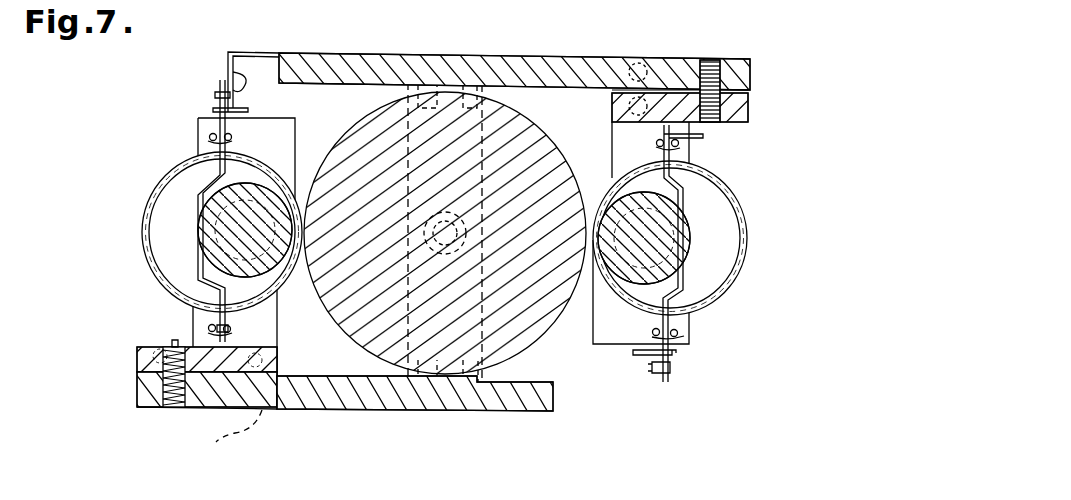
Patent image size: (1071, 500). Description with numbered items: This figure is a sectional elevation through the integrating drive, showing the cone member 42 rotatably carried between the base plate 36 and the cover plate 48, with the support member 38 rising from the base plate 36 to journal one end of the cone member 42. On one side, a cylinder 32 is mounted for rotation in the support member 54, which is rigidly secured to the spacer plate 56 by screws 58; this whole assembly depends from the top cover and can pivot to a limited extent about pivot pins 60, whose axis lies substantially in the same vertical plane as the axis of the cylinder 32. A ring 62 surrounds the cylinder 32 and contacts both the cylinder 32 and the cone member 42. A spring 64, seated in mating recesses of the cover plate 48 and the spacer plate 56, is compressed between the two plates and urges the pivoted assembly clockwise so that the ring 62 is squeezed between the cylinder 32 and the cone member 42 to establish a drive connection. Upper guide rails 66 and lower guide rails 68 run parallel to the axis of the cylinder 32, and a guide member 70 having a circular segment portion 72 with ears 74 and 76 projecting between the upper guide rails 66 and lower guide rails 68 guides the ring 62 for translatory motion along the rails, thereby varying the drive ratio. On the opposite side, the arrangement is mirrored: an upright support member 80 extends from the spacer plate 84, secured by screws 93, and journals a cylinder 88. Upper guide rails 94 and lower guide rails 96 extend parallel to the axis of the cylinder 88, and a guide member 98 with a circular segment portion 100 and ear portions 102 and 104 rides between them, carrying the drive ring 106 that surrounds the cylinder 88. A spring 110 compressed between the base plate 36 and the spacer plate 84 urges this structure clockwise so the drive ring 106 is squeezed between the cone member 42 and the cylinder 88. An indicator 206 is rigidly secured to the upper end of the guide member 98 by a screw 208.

The cylinder 32 is at (675, 258).
The base plate 36 is at (535, 412).
The support member 38 is at (490, 89).
The cone member 42 is at (372, 344).
The cover plate 48 is at (530, 58).
The support member 54 is at (605, 340).
The spacer plate 56 is at (705, 114).
The screws 58 is at (612, 107).
The pivot pins 60 is at (659, 60).
The ring 62 is at (734, 183).
The spring 64 is at (720, 78).
The upper guide rails 66 is at (683, 156).
The lower guide rails 68 is at (687, 335).
The guide member 70 is at (705, 215).
The circular segment portion 72 is at (700, 240).
The ear 74 is at (640, 137).
The ear 76 is at (685, 352).
The upright support member 80 is at (262, 118).
The spacer plate 84 is at (137, 352).
The cylinder 88 is at (248, 185).
The screws 93 is at (152, 350).
The upper guide rails 94 is at (210, 136).
The lower guide rails 96 is at (208, 330).
The guide member 98 is at (190, 200).
The circular segment portion 100 is at (185, 233).
The ear portion 102 is at (218, 90).
The ear portion 104 is at (215, 314).
The drive ring 106 is at (146, 206).
The spring 110 is at (163, 385).
The indicator 206 is at (228, 52).
The screw 208 is at (232, 72).